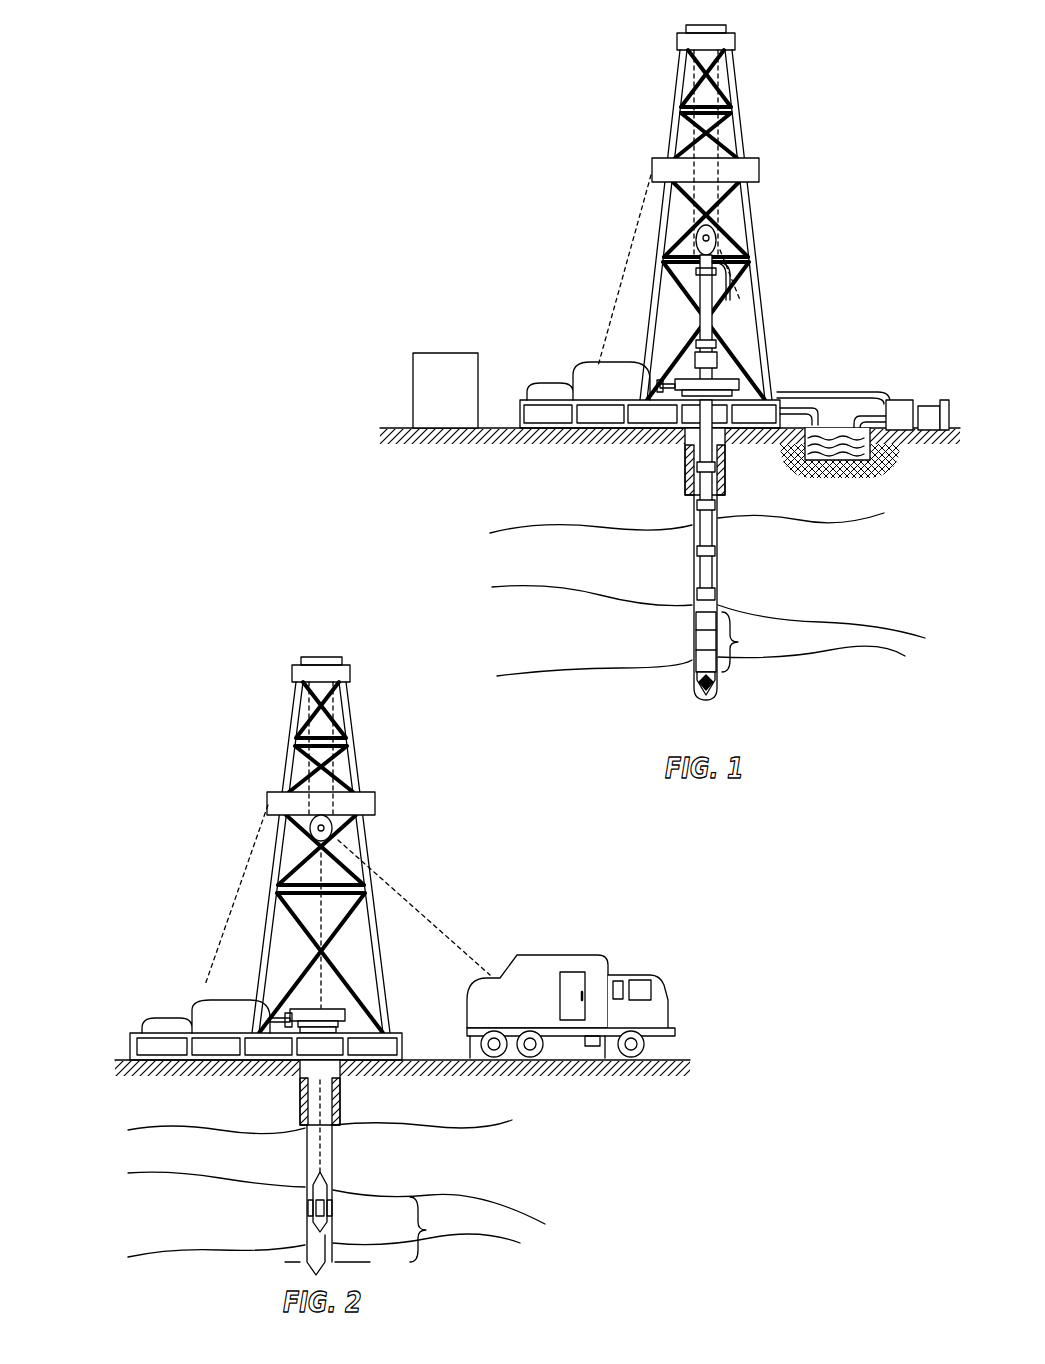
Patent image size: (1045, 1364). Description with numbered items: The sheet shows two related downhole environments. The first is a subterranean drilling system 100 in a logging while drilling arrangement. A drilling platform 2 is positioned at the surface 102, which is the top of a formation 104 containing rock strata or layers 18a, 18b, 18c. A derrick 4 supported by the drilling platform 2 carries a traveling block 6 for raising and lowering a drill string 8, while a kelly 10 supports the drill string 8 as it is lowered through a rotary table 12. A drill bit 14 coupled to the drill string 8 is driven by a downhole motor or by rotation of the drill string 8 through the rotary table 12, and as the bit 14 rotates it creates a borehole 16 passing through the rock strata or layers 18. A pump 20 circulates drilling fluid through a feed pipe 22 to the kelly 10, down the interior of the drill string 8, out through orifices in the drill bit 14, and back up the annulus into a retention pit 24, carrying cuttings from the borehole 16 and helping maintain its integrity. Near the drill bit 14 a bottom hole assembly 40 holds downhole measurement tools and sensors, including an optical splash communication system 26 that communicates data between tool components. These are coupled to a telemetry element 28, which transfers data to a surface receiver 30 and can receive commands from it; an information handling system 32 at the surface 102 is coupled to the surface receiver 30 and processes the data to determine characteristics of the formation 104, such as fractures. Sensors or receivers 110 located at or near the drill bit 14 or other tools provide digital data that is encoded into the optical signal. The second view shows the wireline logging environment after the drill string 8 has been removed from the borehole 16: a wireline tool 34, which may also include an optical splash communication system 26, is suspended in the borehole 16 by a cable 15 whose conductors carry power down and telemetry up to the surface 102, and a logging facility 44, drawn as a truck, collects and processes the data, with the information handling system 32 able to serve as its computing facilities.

In FIG. 1, the subterranean drilling system 100 is at (897, 47).
In FIG. 1, the drilling platform 2 is at (517, 410).
In FIG. 2, the drilling platform 2 is at (402, 1046).
In FIG. 1, the derrick 4 is at (742, 108).
In FIG. 2, the derrick 4 is at (385, 970).
In FIG. 1, the traveling block 6 is at (712, 238).
In FIG. 2, the traveling block 6 is at (325, 825).
In FIG. 1, the drill string 8 is at (708, 527).
In FIG. 1, the kelly 10 is at (706, 318).
In FIG. 1, the rotary table 12 is at (740, 386).
In FIG. 2, the rotary table 12 is at (345, 1018).
In FIG. 1, the drill bit 14 is at (706, 698).
In FIG. 2, the cable 15 is at (318, 1092).
In FIG. 1, the borehole 16 is at (720, 560).
In FIG. 2, the borehole 16 is at (335, 1143).
In FIG. 2, the rock strata or layers 18 is at (431, 1229).
In FIG. 1, the rock stratum or layer 18a is at (536, 622).
In FIG. 2, the rock stratum or layer 18a is at (500, 1106).
In FIG. 1, the rock stratum or layer 18b is at (536, 564).
In FIG. 2, the rock stratum or layer 18b is at (165, 1162).
In FIG. 1, the rock stratum or layer 18c is at (868, 506).
In FIG. 2, the rock stratum or layer 18c is at (165, 1236).
In FIG. 1, the pump 20 is at (900, 400).
In FIG. 1, the feed pipe 22 is at (833, 392).
In FIG. 1, the retention pit 24 is at (808, 460).
In FIG. 1, the optical splash communication system 26 is at (700, 640).
In FIG. 2, the optical splash communication system 26 is at (312, 1215).
In FIG. 1, the telemetry element 28 is at (708, 602).
In FIG. 1, the surface receiver 30 is at (712, 346).
In FIG. 1, the information handling system 32 is at (460, 399).
In FIG. 2, the wireline tool 34 is at (312, 1192).
In FIG. 1, the bottom hole assembly 40 is at (738, 642).
In FIG. 2, the logging facility 44 is at (548, 955).
In FIG. 1, the surface 102 is at (390, 427).
In FIG. 2, the surface 102 is at (126, 1059).
In FIG. 1, the formation 104 is at (450, 442).
In FIG. 2, the formation 104 is at (190, 1076).
In FIG. 1, the sensors or receivers 110 is at (704, 570).